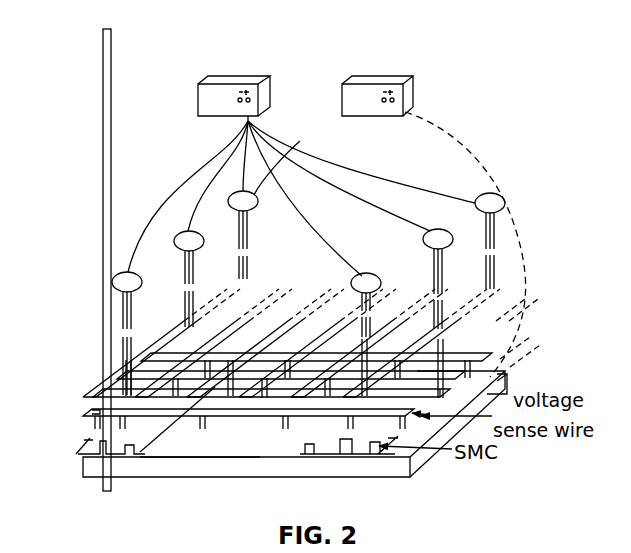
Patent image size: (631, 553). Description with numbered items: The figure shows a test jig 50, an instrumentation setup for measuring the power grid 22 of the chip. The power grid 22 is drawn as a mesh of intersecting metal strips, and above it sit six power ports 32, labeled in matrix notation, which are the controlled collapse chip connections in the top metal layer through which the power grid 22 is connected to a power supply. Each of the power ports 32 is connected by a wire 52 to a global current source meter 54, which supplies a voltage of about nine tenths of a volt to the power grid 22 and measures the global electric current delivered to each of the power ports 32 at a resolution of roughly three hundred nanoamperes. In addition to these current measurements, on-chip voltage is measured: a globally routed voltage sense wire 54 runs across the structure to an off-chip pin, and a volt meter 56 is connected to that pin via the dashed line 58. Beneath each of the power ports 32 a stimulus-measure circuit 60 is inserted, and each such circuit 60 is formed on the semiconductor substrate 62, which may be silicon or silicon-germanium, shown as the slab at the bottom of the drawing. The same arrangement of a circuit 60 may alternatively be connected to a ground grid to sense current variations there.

The test jig 50 is at (50, 143).
The global current source meter 54 is at (196, 98).
The volt meter 56 is at (414, 80).
The dashed line 58 is at (470, 155).
The wires 52 is at (181, 186).
The power ports 32 is at (113, 281).
The power grid 22 is at (92, 392).
The stimulus-measure circuit 60 is at (430, 447).
The semiconductor substrate 62 is at (198, 470).